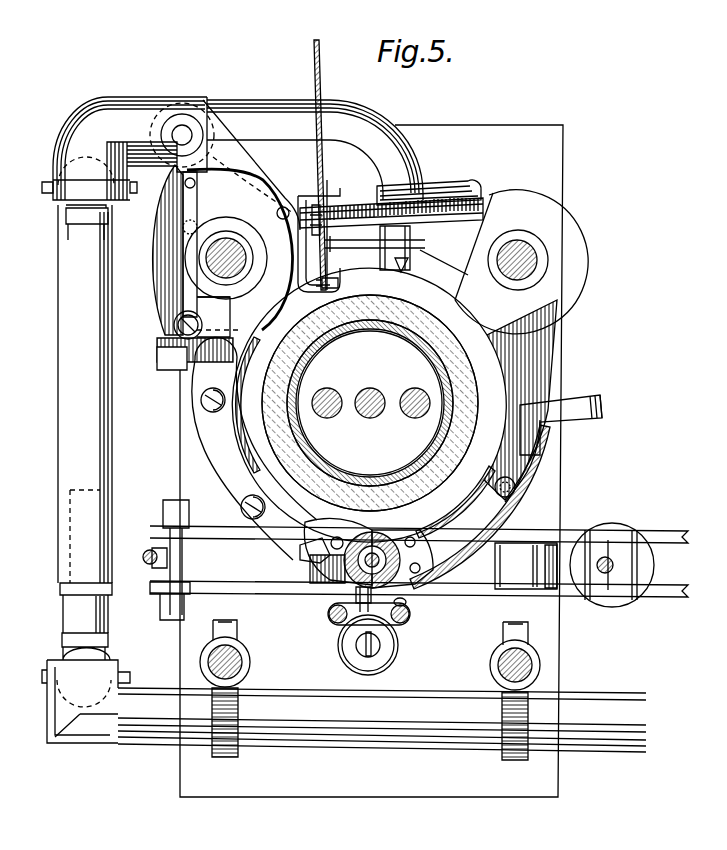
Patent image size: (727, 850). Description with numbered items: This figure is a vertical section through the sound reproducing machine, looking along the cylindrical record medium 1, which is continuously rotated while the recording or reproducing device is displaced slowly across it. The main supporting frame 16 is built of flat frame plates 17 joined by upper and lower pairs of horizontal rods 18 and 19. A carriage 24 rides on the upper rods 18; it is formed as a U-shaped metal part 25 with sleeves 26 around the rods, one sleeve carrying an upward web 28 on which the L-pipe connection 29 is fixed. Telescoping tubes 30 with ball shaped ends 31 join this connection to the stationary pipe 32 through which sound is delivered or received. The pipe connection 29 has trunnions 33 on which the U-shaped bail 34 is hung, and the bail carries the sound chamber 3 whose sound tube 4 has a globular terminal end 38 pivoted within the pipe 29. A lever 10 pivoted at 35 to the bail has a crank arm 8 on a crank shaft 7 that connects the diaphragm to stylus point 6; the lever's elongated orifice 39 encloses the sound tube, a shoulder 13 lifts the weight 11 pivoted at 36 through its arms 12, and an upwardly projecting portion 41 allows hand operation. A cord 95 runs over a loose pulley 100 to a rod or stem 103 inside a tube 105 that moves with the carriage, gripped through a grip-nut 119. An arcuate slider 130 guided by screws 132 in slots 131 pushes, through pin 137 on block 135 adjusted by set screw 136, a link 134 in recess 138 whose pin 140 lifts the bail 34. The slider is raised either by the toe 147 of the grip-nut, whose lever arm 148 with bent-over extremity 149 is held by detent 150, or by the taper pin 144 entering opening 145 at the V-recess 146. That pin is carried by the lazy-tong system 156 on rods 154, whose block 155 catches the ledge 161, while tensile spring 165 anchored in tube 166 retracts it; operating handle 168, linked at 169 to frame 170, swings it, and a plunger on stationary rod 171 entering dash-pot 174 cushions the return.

The record medium 1 is at (416, 312).
The sound chamber 3 is at (391, 213).
The sound tube 4 is at (315, 150).
The stylus point 6 is at (408, 262).
The crank shaft 7 is at (375, 249).
The crank arm 8 is at (312, 240).
The lever 10 is at (332, 178).
The weight 11 is at (450, 184).
The arms 12 is at (314, 198).
The shoulder 13 is at (315, 220).
The main supporting frame 16 is at (371, 444).
The frame plates 17 is at (360, 790).
The upper horizontal rods 18 is at (244, 272).
The lower horizontal rods 19 is at (246, 664).
The carriage 24 is at (444, 253).
The carriage frame 25 is at (246, 362).
The sleeves 26 is at (255, 258).
The web 28 is at (152, 222).
The L-pipe connection 29 is at (155, 97).
The telescoping tubes 30 is at (58, 350).
The ball shaped ends 31 is at (62, 205).
The stationary pipe 32 is at (146, 730).
The trunnions 33 is at (186, 130).
The bail 34 is at (243, 215).
The pivot 35 is at (338, 283).
The pivot 36 is at (277, 212).
The globular terminal end 38 is at (184, 103).
The elongated orifice 39 is at (314, 100).
The upwardly projecting portion 41 is at (317, 40).
The cord 95 is at (144, 558).
The loose pulley 100 is at (152, 554).
The rod or stem 103 is at (427, 525).
The tube 105 is at (396, 556).
The grip-nut 119 is at (380, 542).
The slider 130 is at (254, 448).
The slots 131 is at (218, 413).
The screws 132 is at (210, 412).
The link 134 is at (200, 302).
The block 135 is at (232, 332).
The set screw 136 is at (174, 328).
The pin 137 is at (210, 354).
The recess 138 is at (197, 200).
The pin 140 is at (196, 183).
The taper pin 144 is at (323, 552).
The opening 145 is at (303, 575).
The V-recess 146 is at (288, 556).
The toe 147 is at (330, 530).
The lever arm 148 is at (480, 507).
The bent-over extremity 149 is at (566, 423).
The detent 150 is at (516, 489).
The rods 154 is at (332, 625).
The block 155 is at (403, 638).
The lazy-tong system 156 is at (526, 566).
The ledge 161 is at (408, 604).
The tensile spring 165 is at (352, 656).
The tube 166 is at (390, 662).
The operating handle 168 is at (660, 540).
The link connection 169 is at (152, 590).
The frame of the machine 170 is at (172, 508).
The stationary rod 171 is at (612, 575).
The dash-pot 174 is at (614, 532).